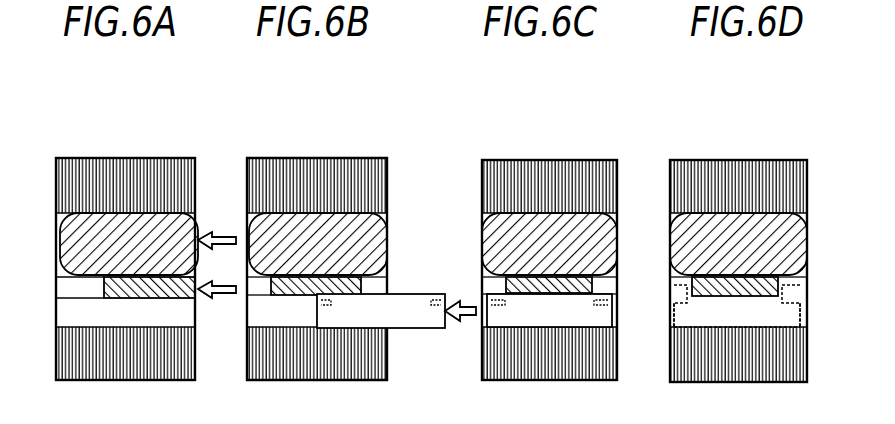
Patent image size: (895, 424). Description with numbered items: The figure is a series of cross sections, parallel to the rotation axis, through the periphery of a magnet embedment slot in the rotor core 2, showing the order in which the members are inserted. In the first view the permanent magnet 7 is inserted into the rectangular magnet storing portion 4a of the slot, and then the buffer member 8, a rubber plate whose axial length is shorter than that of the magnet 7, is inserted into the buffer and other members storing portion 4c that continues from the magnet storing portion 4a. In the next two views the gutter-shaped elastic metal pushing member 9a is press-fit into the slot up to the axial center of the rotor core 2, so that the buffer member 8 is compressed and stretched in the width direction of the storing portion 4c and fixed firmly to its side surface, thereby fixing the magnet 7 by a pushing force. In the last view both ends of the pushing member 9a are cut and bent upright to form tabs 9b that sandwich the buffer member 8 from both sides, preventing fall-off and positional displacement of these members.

In FIG. 6A, the rotor core 2 is at (164, 171).
In FIG. 6B, the rotor core 2 is at (357, 171).
In FIG. 6C, the rotor core 2 is at (583, 170).
In FIG. 6D, the rotor core 2 is at (773, 170).
In FIG. 6A, the permanent magnet 7 is at (72, 222).
In FIG. 6B, the permanent magnet 7 is at (262, 222).
In FIG. 6C, the permanent magnet 7 is at (490, 222).
In FIG. 6D, the permanent magnet 7 is at (677, 222).
In FIG. 6A, the buffer member 8 is at (102, 288).
In FIG. 6B, the buffer member 8 is at (272, 290).
In FIG. 6C, the buffer member 8 is at (505, 288).
In FIG. 6D, the buffer member 8 is at (778, 290).
In FIG. 6A, the magnet storing portion 4a is at (58, 271).
In FIG. 6A, the buffer and other members storing portion 4c is at (67, 312).
In FIG. 6B, the pushing member 9a is at (398, 320).
In FIG. 6C, the pushing member 9a is at (600, 318).
In FIG. 6D, the pushing member 9a is at (792, 320).
In FIG. 6D, the tabs 9b is at (687, 290).